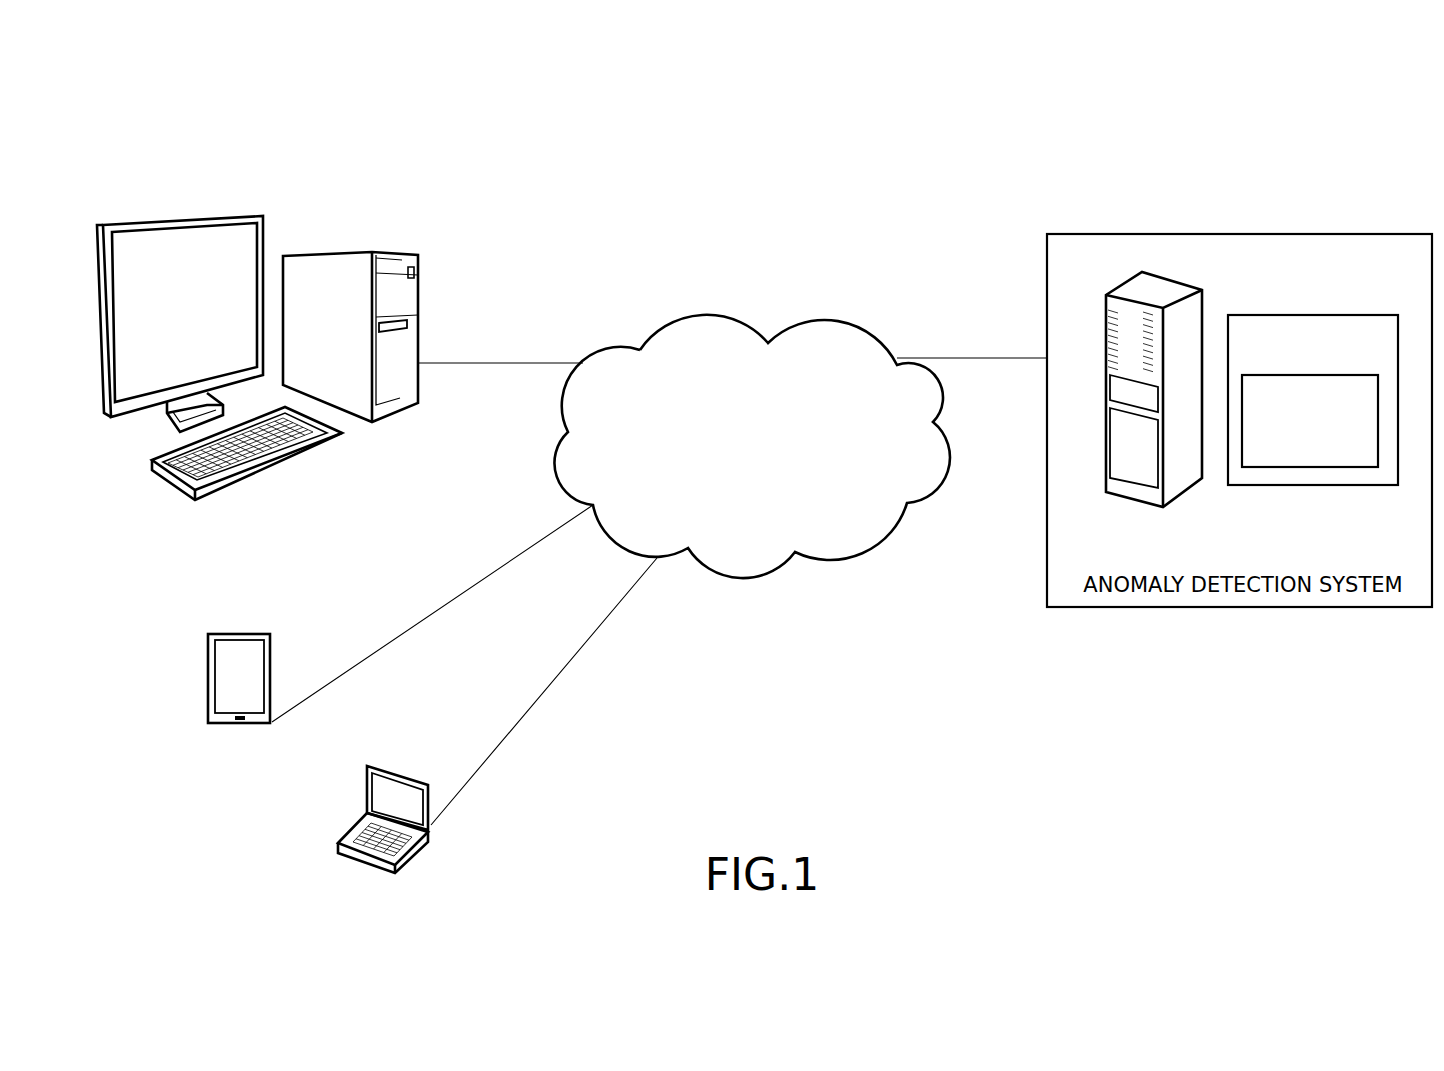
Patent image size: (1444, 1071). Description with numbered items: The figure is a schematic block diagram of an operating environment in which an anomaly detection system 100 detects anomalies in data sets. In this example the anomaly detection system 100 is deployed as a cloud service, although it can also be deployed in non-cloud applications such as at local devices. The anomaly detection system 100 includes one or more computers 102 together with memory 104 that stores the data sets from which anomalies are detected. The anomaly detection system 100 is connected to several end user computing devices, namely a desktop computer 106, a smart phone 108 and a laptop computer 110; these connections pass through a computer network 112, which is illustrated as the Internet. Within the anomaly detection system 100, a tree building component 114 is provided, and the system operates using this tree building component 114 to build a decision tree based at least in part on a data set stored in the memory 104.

The anomaly detection system 100 is at (1222, 135).
The computers 102 is at (1183, 285).
The memory 104 is at (1313, 313).
The desktop computer 106 is at (183, 215).
The smart phone 108 is at (251, 633).
The laptop computer 110 is at (405, 773).
The computer network 112 is at (780, 328).
The tree building component 114 is at (1328, 467).